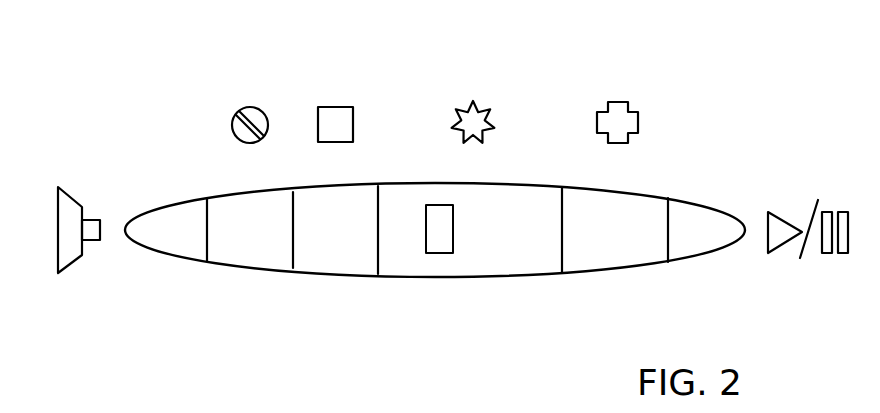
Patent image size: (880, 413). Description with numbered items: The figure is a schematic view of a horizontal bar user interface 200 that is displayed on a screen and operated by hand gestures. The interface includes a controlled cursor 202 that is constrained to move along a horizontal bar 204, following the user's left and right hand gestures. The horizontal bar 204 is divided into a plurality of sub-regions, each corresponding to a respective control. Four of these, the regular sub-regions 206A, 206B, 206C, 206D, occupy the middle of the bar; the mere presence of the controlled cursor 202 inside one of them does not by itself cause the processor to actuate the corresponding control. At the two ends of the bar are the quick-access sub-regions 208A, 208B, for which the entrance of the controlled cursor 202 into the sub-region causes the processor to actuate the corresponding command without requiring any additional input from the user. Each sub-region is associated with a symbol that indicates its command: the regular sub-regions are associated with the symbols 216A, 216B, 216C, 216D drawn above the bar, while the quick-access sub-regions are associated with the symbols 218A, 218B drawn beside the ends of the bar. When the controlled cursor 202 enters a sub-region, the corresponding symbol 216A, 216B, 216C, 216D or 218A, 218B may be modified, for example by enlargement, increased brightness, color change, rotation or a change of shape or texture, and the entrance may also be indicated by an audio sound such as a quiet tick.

The horizontal bar user interface 200 is at (732, 85).
The controlled cursor 202 is at (440, 255).
The horizontal bar 204 is at (743, 221).
The regular sub-region 206A is at (277, 270).
The regular sub-region 206B is at (348, 275).
The regular sub-region 206C is at (547, 276).
The regular sub-region 206D is at (627, 270).
The quick-access sub-region 208A is at (184, 263).
The quick-access sub-region 208B is at (706, 263).
The symbol 216A is at (246, 106).
The symbol 216B is at (330, 105).
The symbol 216C is at (473, 100).
The symbol 216D is at (613, 100).
The symbol 218A is at (78, 200).
The symbol 218B is at (808, 210).